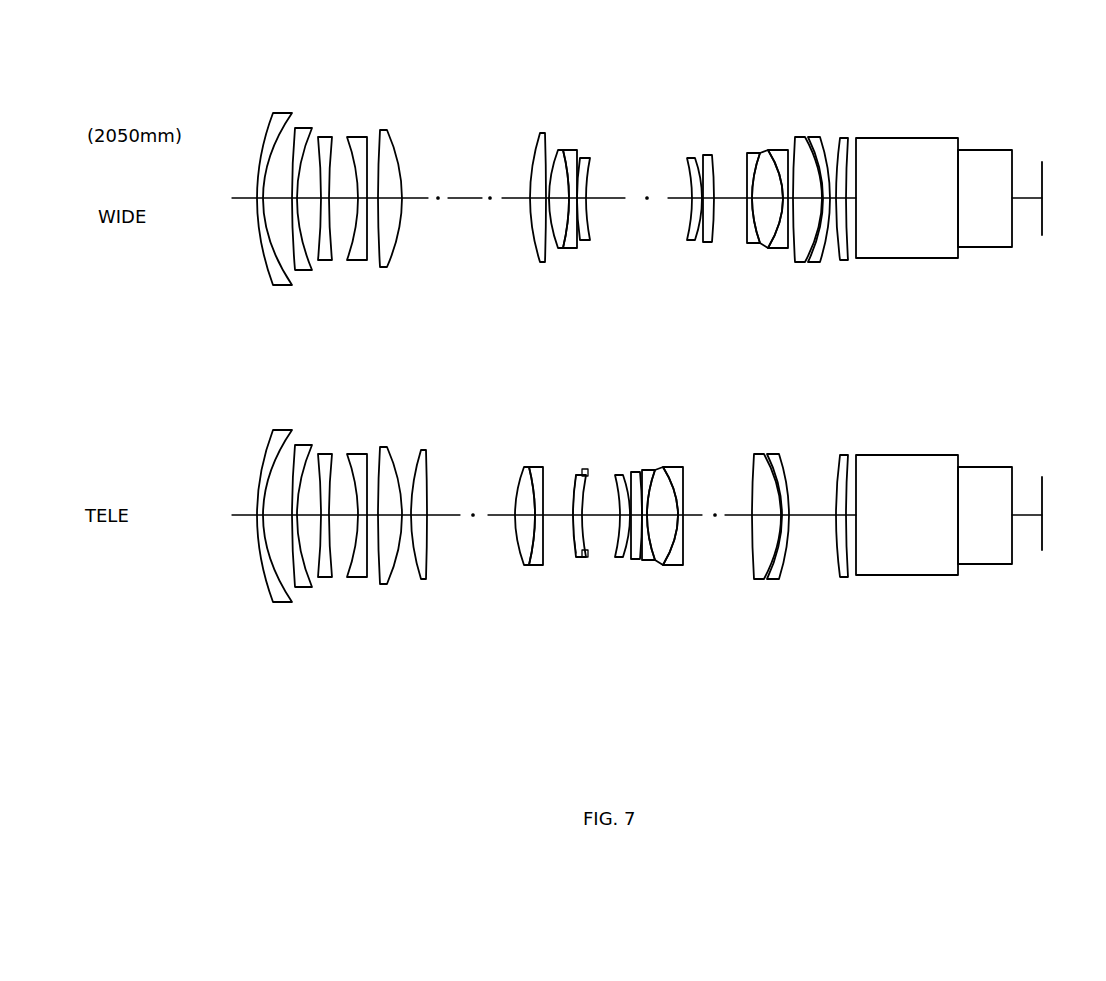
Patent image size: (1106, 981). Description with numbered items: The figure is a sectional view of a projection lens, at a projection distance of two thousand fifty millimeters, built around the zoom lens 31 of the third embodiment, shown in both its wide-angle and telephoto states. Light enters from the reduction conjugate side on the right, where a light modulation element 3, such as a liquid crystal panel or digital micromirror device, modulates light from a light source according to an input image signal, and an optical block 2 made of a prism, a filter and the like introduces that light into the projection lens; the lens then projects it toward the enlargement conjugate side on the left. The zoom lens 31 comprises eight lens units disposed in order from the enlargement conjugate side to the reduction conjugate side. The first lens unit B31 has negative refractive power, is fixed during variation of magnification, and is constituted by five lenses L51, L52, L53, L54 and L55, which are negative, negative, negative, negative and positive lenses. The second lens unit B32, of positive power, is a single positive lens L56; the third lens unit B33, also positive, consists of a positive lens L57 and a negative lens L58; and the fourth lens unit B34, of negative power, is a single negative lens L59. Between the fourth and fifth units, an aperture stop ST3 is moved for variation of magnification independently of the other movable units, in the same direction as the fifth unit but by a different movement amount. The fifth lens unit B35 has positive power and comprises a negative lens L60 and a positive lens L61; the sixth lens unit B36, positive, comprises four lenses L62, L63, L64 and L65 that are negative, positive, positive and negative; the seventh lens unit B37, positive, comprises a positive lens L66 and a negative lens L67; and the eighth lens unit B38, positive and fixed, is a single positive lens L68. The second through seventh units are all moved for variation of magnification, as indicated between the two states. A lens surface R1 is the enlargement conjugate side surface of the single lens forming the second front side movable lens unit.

The negative lens L51 is at (280, 113).
The negative lens L52 is at (312, 128).
The negative lens L53 is at (330, 137).
The negative lens L54 is at (362, 137).
The positive lens L55 is at (383, 130).
The positive lens L56 is at (542, 133).
The positive lens L57 is at (560, 150).
The negative lens L58 is at (570, 150).
The negative lens L59 is at (590, 158).
The negative lens L60 is at (690, 158).
The positive lens L61 is at (703, 155).
The negative lens L62 is at (749, 153).
The positive lens L63 is at (758, 153).
The positive lens L64 is at (768, 150).
The negative lens L65 is at (796, 137).
The positive lens L66 is at (808, 137).
The negative lens L67 is at (822, 137).
The positive lens L68 is at (846, 138).
The first lens unit B31 is at (402, 292).
The second lens unit B32 is at (515, 378).
The third lens unit B33 is at (566, 377).
The fourth lens unit B34 is at (600, 373).
The fifth lens unit B35 is at (636, 379).
The sixth lens unit B36 is at (708, 379).
The seventh lens unit B37 is at (780, 378).
The eighth lens unit B38 is at (840, 382).
The aperture stop ST3 is at (588, 458).
The lens surface R1 is at (574, 553).
The zoom lens 31 is at (862, 623).
The optical block 2 is at (1008, 620).
The light modulation element 3 is at (1042, 492).